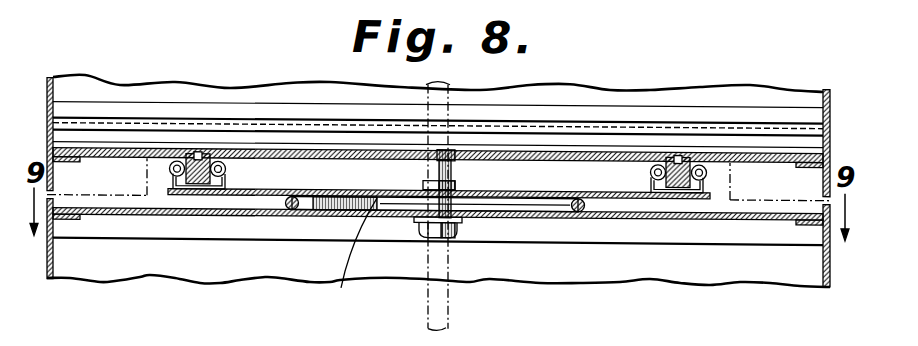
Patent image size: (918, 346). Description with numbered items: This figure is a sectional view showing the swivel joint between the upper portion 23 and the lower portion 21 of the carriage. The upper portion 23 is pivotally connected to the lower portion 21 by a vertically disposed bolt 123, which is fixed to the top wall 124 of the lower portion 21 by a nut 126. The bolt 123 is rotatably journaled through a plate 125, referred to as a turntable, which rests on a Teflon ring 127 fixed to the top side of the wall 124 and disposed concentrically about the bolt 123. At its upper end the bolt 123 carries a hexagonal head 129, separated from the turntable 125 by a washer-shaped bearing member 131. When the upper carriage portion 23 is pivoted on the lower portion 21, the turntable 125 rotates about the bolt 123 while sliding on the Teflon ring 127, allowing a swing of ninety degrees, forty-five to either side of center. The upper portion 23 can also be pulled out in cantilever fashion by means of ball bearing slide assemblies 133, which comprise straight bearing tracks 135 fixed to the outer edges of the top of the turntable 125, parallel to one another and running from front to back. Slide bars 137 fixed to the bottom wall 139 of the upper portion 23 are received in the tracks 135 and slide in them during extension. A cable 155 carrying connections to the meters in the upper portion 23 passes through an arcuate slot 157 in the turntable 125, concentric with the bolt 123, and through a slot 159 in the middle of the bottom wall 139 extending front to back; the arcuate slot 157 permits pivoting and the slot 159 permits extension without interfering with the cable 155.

The lower portion of the carriage 21 is at (120, 270).
The upper portion of the carriage 23 is at (183, 92).
The bolt 123 is at (432, 243).
The top wall 124 is at (643, 215).
The plate (turntable) 125 is at (288, 188).
The nut 126 is at (457, 226).
The Teflon ring 127 is at (288, 198).
The hexagonal head 129 is at (429, 180).
The washer-shaped bearing member 131 is at (459, 185).
The ball bearing slide assemblies 133 is at (156, 170).
The bearing tracks 135 is at (233, 172).
The slide bars 137 is at (204, 177).
The bottom wall 139 is at (576, 150).
The cable 155 is at (427, 311).
The arcuate slot 157 is at (345, 256).
The slot 159 is at (454, 149).